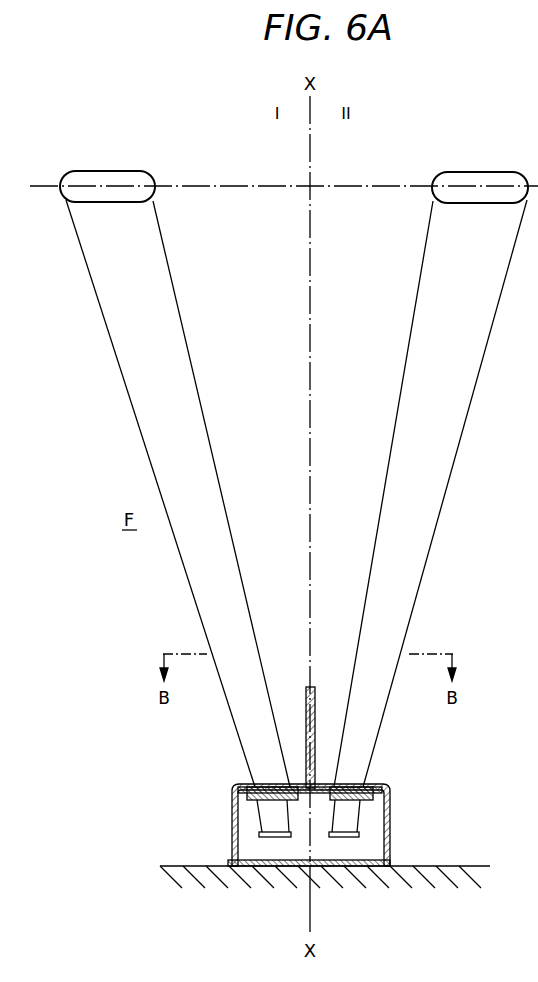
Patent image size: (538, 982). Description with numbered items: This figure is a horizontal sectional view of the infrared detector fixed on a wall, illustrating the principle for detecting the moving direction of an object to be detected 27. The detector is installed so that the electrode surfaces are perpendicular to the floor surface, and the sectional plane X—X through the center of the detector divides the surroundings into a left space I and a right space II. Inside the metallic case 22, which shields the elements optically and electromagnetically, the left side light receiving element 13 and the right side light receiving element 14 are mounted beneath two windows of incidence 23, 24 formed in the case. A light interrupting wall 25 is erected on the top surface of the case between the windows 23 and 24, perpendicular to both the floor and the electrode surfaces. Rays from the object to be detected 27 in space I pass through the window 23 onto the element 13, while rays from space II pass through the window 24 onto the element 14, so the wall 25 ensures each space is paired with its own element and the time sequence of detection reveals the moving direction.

The light receiving element 13 is at (262, 838).
The light receiving element 14 is at (358, 837).
The metallic case 22 is at (391, 821).
The window of incidence 23 is at (262, 785).
The window of incidence 24 is at (360, 792).
The light interrupting wall 25 is at (316, 712).
The object to be detected 27 is at (85, 178).